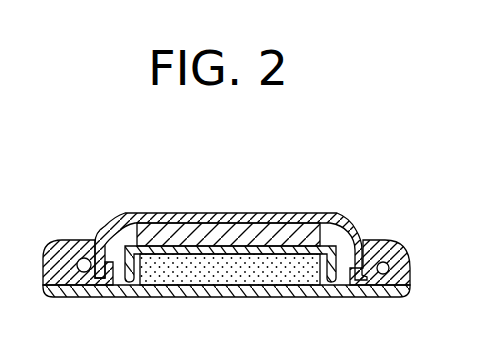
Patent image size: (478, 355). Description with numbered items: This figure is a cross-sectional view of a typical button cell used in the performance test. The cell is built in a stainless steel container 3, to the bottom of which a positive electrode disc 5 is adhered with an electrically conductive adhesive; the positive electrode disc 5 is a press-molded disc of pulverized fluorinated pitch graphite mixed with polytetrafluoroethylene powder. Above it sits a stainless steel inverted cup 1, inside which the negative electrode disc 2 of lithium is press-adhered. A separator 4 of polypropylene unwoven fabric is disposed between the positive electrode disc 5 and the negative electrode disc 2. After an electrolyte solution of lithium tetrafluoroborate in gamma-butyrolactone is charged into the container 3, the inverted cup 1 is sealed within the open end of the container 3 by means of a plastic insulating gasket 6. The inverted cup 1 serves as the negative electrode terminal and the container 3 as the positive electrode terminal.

The stainless steel inverted cup 1 is at (200, 220).
The negative electrode disc 2 is at (264, 228).
The stainless steel container 3 is at (408, 260).
The separator 4 is at (331, 272).
The positive electrode disc 5 is at (227, 273).
The plastic insulating gasket 6 is at (86, 280).